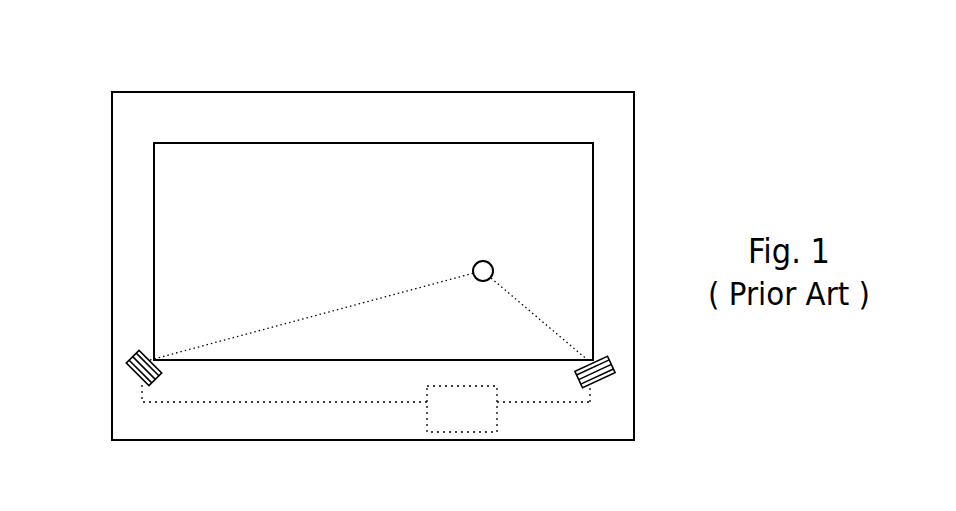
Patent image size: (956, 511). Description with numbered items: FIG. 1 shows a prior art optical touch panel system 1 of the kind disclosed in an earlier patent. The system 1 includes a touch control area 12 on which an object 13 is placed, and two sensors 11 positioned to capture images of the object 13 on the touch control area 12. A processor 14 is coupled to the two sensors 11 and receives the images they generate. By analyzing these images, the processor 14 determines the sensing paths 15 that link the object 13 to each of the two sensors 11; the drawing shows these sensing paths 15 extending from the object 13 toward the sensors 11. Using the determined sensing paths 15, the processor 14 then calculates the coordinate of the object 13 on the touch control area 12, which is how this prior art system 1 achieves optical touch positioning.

The optical touch panel system 1 is at (100, 66).
The sensors 11 is at (128, 371).
The touch control area 12 is at (377, 156).
The object 13 is at (494, 268).
The processor 14 is at (462, 444).
The sensing paths 15 is at (283, 328).